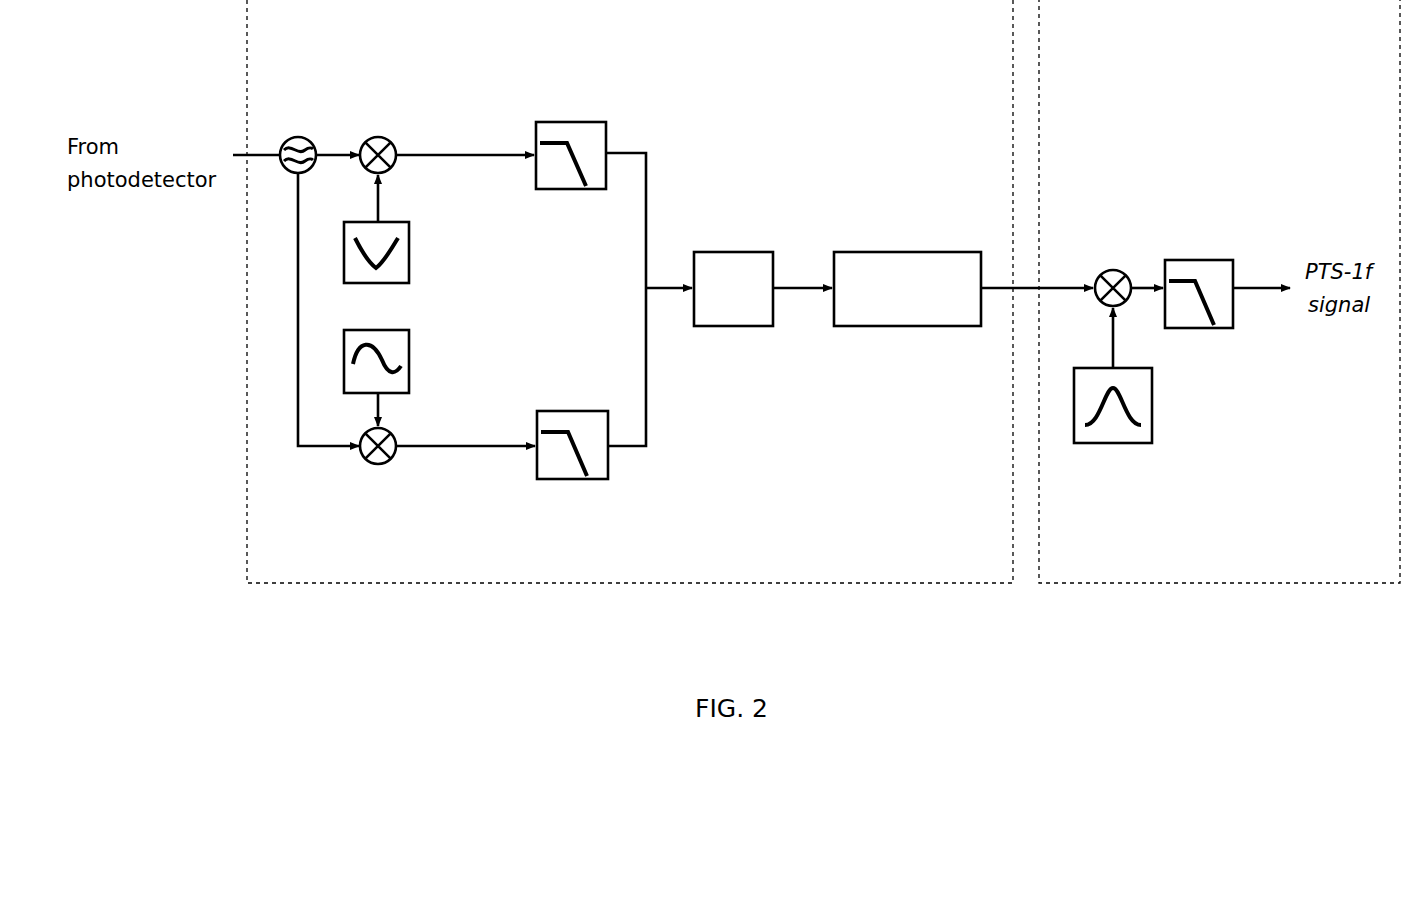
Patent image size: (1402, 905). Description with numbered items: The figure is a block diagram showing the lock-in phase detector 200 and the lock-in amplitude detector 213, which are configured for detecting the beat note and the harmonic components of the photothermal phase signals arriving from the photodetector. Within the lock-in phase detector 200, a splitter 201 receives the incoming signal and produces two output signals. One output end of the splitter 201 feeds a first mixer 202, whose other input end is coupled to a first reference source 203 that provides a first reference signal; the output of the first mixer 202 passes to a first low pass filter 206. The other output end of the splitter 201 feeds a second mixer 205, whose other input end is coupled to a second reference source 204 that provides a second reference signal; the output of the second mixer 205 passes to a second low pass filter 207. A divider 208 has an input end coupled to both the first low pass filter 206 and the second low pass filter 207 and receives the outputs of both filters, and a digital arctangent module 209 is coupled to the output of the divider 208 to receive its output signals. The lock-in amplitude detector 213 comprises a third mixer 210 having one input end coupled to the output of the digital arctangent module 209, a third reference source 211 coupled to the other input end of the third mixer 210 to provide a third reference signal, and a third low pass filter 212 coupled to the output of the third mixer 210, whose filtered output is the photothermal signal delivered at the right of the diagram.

The lock-in phase detector 200 is at (855, 585).
The splitter 201 is at (298, 137).
The first mixer 202 is at (379, 137).
The first reference source 203 is at (410, 254).
The second reference source 204 is at (410, 364).
The second mixer 205 is at (383, 465).
The first low pass filter 206 is at (548, 118).
The second low pass filter 207 is at (570, 482).
The divider 208 is at (708, 252).
The digital arctangent module 209 is at (868, 252).
The third mixer 210 is at (1098, 272).
The third reference source 211 is at (1153, 415).
The third low pass filter 212 is at (1180, 258).
The lock-in amplitude detector 213 is at (1173, 585).